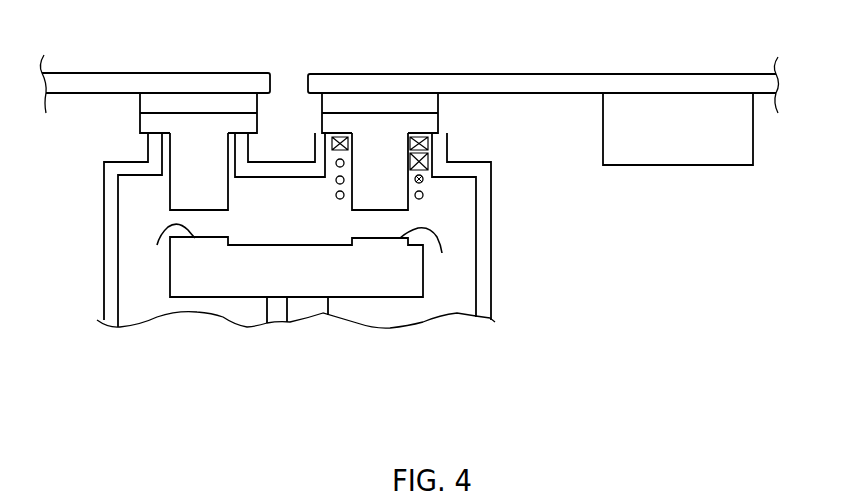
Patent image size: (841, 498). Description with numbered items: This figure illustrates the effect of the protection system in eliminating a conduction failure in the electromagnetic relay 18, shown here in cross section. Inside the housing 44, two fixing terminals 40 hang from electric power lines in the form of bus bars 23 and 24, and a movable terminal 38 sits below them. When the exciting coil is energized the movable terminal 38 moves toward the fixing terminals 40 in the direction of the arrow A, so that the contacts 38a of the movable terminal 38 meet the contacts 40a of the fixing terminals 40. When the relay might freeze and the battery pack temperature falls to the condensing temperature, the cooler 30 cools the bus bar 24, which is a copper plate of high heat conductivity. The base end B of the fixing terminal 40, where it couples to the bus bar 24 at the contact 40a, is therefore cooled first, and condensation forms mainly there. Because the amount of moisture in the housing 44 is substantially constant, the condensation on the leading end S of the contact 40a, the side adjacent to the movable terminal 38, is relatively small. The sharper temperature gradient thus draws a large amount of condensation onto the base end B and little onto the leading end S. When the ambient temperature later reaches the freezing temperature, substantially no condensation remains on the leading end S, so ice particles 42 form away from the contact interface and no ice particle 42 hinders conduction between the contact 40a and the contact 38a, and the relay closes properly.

The bus bar 23 is at (107, 72).
The bus bar 24 is at (533, 74).
The cooler 30 is at (725, 157).
The fixing terminal 40 is at (138, 100).
The contact of the fixing terminal 40a is at (167, 192).
The ice particles 42 is at (315, 145).
The housing 44 is at (104, 303).
The movable terminal 38 is at (219, 287).
The contact of the movable terminal 38a is at (157, 245).
The electromagnetic relay 18 is at (505, 232).
The base end B is at (319, 120).
The leading end S is at (231, 213).
The arrow A is at (297, 227).